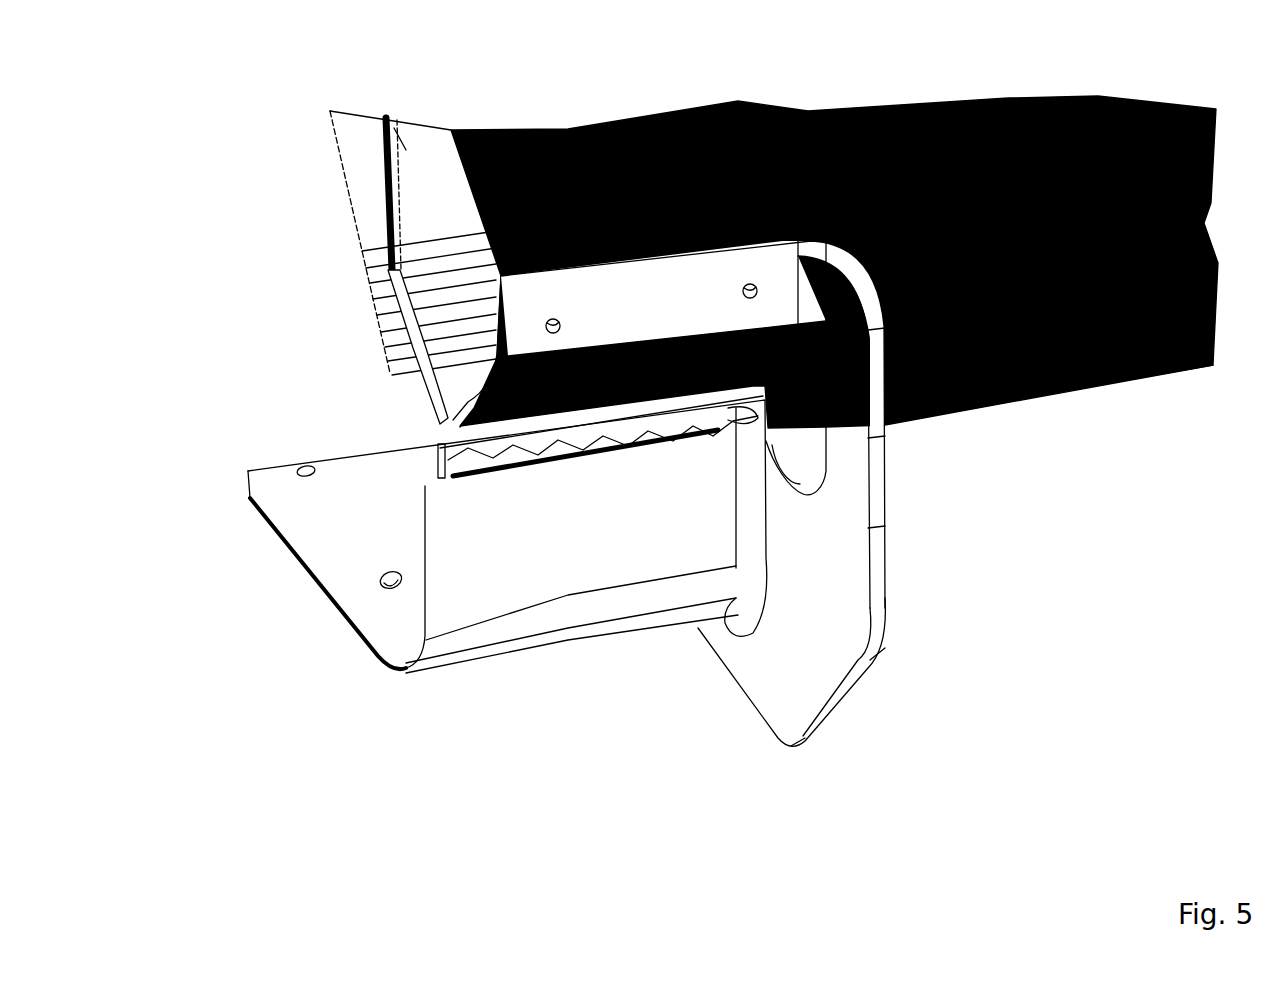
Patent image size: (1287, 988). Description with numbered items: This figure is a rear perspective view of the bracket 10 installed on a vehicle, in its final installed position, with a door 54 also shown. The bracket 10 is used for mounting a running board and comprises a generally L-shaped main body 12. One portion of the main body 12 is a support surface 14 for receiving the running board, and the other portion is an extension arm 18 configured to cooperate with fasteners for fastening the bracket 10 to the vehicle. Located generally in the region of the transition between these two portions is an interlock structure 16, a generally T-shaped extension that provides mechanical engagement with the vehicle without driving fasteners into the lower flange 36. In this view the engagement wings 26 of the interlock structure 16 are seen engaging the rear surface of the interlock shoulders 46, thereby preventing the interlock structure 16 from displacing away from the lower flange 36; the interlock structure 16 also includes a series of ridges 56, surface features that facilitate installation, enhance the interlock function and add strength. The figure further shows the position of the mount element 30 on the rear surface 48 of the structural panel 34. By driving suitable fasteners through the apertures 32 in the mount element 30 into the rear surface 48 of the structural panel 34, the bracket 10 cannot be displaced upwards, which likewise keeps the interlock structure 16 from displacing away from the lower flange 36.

The bracket 10 is at (288, 682).
The main body 12 is at (853, 617).
The support surface 14 is at (340, 463).
The interlock structure 16 is at (455, 390).
The extension arm 18 is at (850, 447).
The engagement wings 26 is at (727, 443).
The mount element 30 is at (493, 262).
The apertures 32 is at (530, 315).
The structural panel 34 is at (380, 113).
The lower flange 36 is at (1117, 372).
The interlock shoulders 46 is at (710, 332).
The rear surface 48 is at (640, 120).
The door 54 is at (340, 183).
The ridges 56 is at (538, 440).